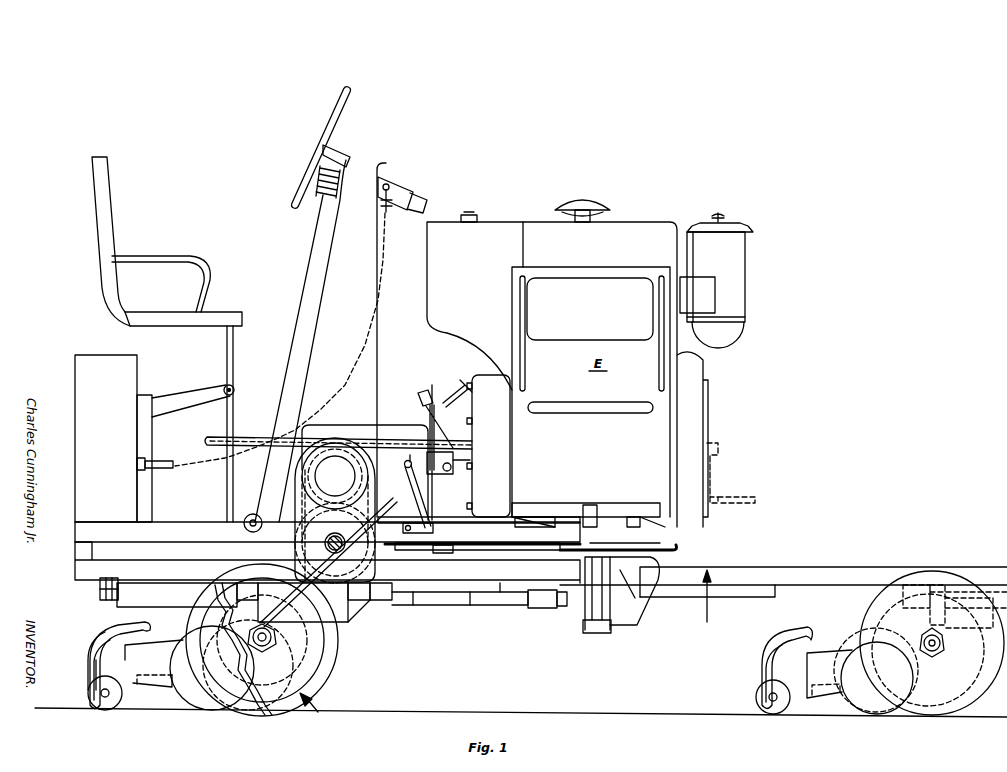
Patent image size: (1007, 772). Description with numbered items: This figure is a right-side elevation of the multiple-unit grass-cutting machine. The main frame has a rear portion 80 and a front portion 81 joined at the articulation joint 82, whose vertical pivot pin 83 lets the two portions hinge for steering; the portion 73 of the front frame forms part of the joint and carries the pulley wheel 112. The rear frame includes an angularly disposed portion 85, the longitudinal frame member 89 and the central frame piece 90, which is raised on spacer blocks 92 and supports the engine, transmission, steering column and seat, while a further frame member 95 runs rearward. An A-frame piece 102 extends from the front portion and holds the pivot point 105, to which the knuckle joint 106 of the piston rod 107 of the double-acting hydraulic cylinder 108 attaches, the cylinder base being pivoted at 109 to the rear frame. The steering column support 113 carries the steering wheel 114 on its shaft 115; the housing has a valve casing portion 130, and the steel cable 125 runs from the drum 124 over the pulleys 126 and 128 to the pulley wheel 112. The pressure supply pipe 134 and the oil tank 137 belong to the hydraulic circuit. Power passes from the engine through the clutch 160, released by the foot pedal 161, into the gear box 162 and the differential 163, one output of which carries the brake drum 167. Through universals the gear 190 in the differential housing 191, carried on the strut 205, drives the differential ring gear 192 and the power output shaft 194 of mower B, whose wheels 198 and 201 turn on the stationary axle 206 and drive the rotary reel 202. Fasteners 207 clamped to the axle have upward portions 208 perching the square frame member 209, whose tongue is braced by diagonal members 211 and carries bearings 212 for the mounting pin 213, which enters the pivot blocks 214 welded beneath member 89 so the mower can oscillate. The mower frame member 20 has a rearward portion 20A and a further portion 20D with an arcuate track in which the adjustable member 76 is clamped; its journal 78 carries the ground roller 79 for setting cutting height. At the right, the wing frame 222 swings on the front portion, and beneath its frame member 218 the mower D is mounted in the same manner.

The steering wheel 114 is at (340, 113).
The shaft 115 is at (340, 152).
The valve casing portion 130 is at (402, 185).
The drum 124 is at (322, 194).
The steel cable 125 is at (310, 256).
The steering column support 113 is at (370, 348).
The tank 137 is at (77, 405).
The pressure supply pipe 134 is at (165, 462).
The brake drum 167 is at (306, 422).
The differential 163 is at (343, 425).
The gear box 162 is at (400, 425).
The foot pedal 161 is at (441, 400).
The clutch 160 is at (505, 424).
The gear 190 is at (300, 469).
The unit B differential housing 191 is at (392, 478).
The mowing unit power output shaft 194 is at (345, 522).
The pulley 126 is at (257, 517).
The pulley 128 is at (440, 540).
The longitudinal frame member 89 is at (155, 560).
The frame blocks 214 is at (245, 583).
The strut 205 is at (300, 565).
The spacer blocks 92 is at (78, 552).
The central frame piece 90 is at (648, 543).
The pulley wheel 112 is at (676, 551).
The rear beam 95 is at (745, 567).
The right-hand frame member 218 is at (855, 567).
The mowing unit D is at (932, 568).
The wing frame 222 is at (972, 568).
The pivot 109 is at (103, 600).
The hydraulic cylinder 108 is at (122, 600).
The arcuately adjustable member 76 is at (108, 638).
The rearwardly extending portion 20A is at (155, 643).
The upwardly extending portion 208 is at (197, 593).
The frame member of square section 209 is at (272, 637).
The mounting pin 213 is at (340, 598).
The diagonal members 211 is at (335, 636).
The fasteners 207 is at (325, 650).
The frame member 20 is at (322, 668).
The wheel 201 is at (320, 688).
The differential ring gear 192 is at (390, 606).
The bearings 212 is at (360, 602).
The rear portion of frame 80 is at (456, 606).
The hydraulic piston rod 107 is at (480, 607).
The angularly disposed portion 85 is at (503, 583).
The pivot point 105 is at (540, 604).
The knuckle joint 106 is at (558, 606).
The portion of front frame member 73 is at (628, 578).
The articulation joint 82 is at (616, 616).
The vertical pivot pin 83 is at (597, 634).
The front portion of frame 81 is at (703, 603).
The A-frame piece 102 is at (745, 598).
The rearwardly extending portion 20D is at (90, 668).
The ground roller 79 is at (100, 708).
The journal 78 is at (106, 700).
The rotary reel 202 is at (200, 703).
The wheel 198 is at (253, 708).
The axle 206 is at (285, 700).
The mowing unit B is at (316, 717).